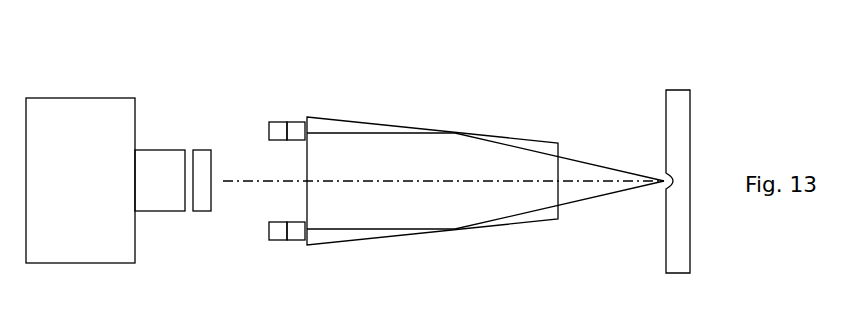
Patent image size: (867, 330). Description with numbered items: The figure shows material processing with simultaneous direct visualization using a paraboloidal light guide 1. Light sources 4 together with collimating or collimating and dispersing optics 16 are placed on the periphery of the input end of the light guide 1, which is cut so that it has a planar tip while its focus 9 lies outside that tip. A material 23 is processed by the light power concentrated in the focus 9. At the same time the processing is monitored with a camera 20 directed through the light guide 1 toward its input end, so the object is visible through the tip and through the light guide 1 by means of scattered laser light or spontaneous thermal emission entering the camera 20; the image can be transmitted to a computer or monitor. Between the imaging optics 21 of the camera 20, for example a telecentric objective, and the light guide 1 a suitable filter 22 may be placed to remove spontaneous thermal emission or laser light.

The camera 20 is at (136, 108).
The imaging optics 21 is at (157, 150).
The filter 22 is at (203, 150).
The light source 4 is at (275, 122).
The collimating or collimating and dispersing optics 16 is at (297, 122).
The paraboloidal light guide 1 is at (383, 125).
The focus 9 is at (663, 181).
The material 23 is at (666, 123).